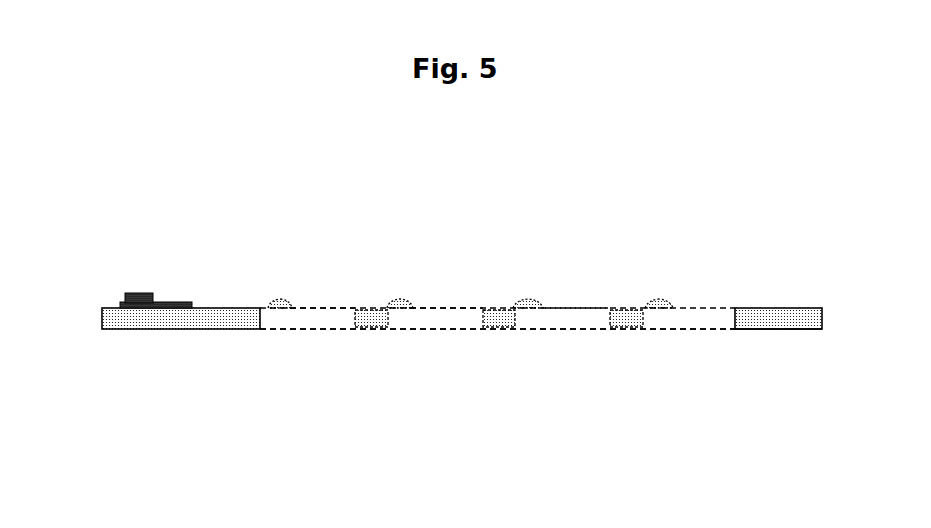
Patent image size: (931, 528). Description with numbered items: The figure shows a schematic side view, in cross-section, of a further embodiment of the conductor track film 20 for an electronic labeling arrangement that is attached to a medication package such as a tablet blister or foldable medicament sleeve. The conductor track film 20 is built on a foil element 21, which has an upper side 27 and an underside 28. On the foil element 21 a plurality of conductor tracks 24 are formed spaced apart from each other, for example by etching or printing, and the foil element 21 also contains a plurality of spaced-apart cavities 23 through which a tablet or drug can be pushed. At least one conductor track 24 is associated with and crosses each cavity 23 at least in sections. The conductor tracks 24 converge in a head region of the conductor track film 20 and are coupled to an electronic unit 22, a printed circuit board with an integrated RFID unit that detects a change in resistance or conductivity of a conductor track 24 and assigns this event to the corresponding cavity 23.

The conductor track film 20 is at (129, 180).
The foil element 21 is at (781, 318).
The electronic unit 22 is at (152, 300).
The cavities 23 is at (313, 315).
The conductor tracks 24 is at (278, 305).
The upper side 27 is at (627, 300).
The underside 28 is at (757, 336).